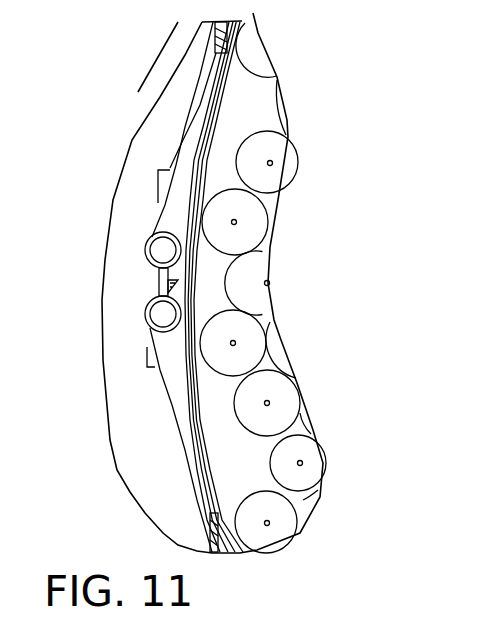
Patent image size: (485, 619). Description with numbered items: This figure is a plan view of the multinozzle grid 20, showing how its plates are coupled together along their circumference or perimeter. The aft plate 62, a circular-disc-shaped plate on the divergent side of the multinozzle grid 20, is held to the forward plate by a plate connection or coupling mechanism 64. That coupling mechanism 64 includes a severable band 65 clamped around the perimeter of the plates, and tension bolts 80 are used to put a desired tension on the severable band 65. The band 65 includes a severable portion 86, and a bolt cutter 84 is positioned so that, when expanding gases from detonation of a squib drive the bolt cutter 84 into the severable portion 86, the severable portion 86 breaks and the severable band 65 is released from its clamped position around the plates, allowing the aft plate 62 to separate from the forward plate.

The multinozzle grid 20 is at (131, 40).
The aft plate 62 is at (250, 98).
The plate connection or coupling mechanism 64 is at (250, 98).
The severable band 65 is at (182, 132).
The tension bolts 80 is at (155, 250).
The bolt cutter 84 is at (195, 283).
The severable portion 86 is at (165, 283).